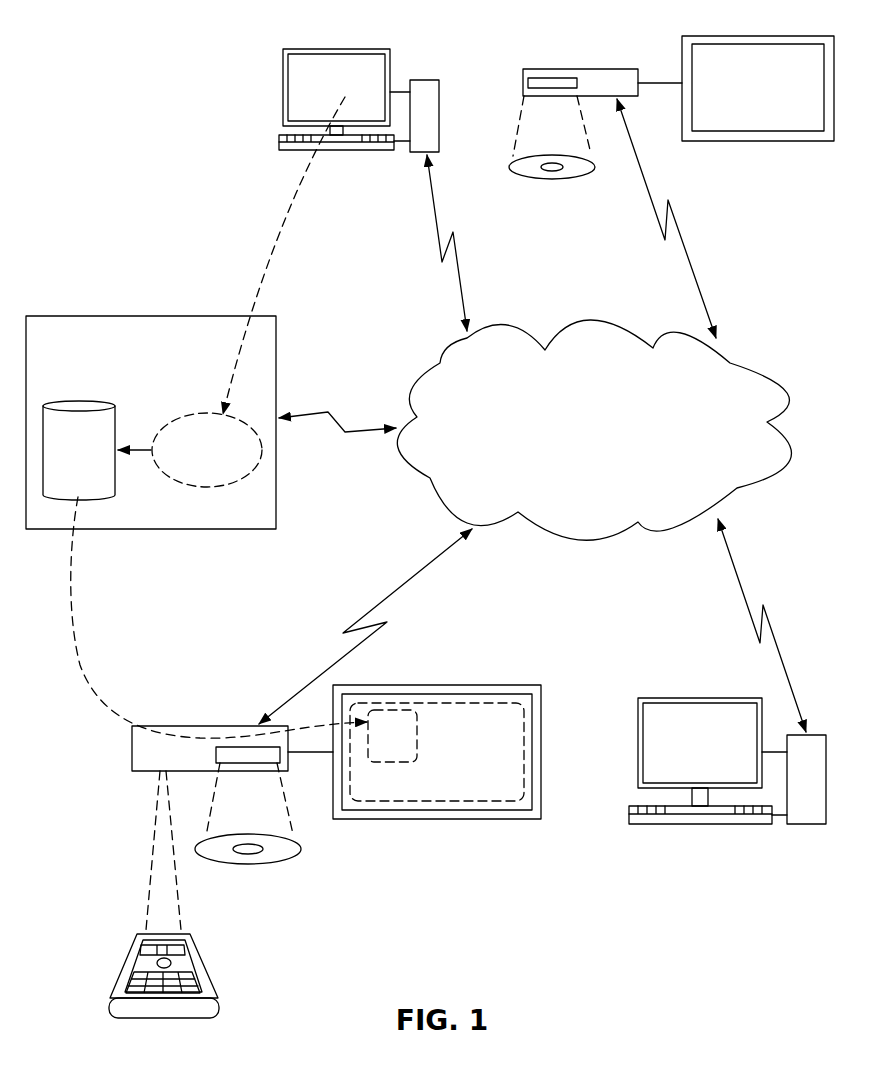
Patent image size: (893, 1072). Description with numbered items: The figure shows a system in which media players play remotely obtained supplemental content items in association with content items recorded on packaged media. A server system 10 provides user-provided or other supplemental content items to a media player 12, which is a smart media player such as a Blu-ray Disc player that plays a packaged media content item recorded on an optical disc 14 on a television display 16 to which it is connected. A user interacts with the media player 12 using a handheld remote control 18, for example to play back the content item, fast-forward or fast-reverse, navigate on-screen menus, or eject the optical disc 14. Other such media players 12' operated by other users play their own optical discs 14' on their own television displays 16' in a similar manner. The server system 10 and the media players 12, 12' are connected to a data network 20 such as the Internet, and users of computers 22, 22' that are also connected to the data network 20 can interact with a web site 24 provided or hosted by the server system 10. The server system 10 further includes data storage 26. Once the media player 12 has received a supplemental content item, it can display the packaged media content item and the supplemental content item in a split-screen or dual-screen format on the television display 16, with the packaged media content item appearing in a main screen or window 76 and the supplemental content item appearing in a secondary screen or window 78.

The server system 10 is at (165, 316).
The media player 12 is at (232, 803).
The media player 12' is at (602, 54).
The optical disc 14 is at (264, 829).
The optical disc 14' is at (552, 159).
The television display 16 is at (437, 780).
The television display 16' is at (758, 116).
The handheld remote control 18 is at (212, 987).
The data network 20 is at (414, 484).
The computer 22 is at (701, 761).
The computer 22' is at (325, 95).
The web site 24 is at (232, 484).
The data storage 26 is at (112, 498).
The main screen or window 76 is at (497, 802).
The secondary screen or window 78 is at (417, 718).